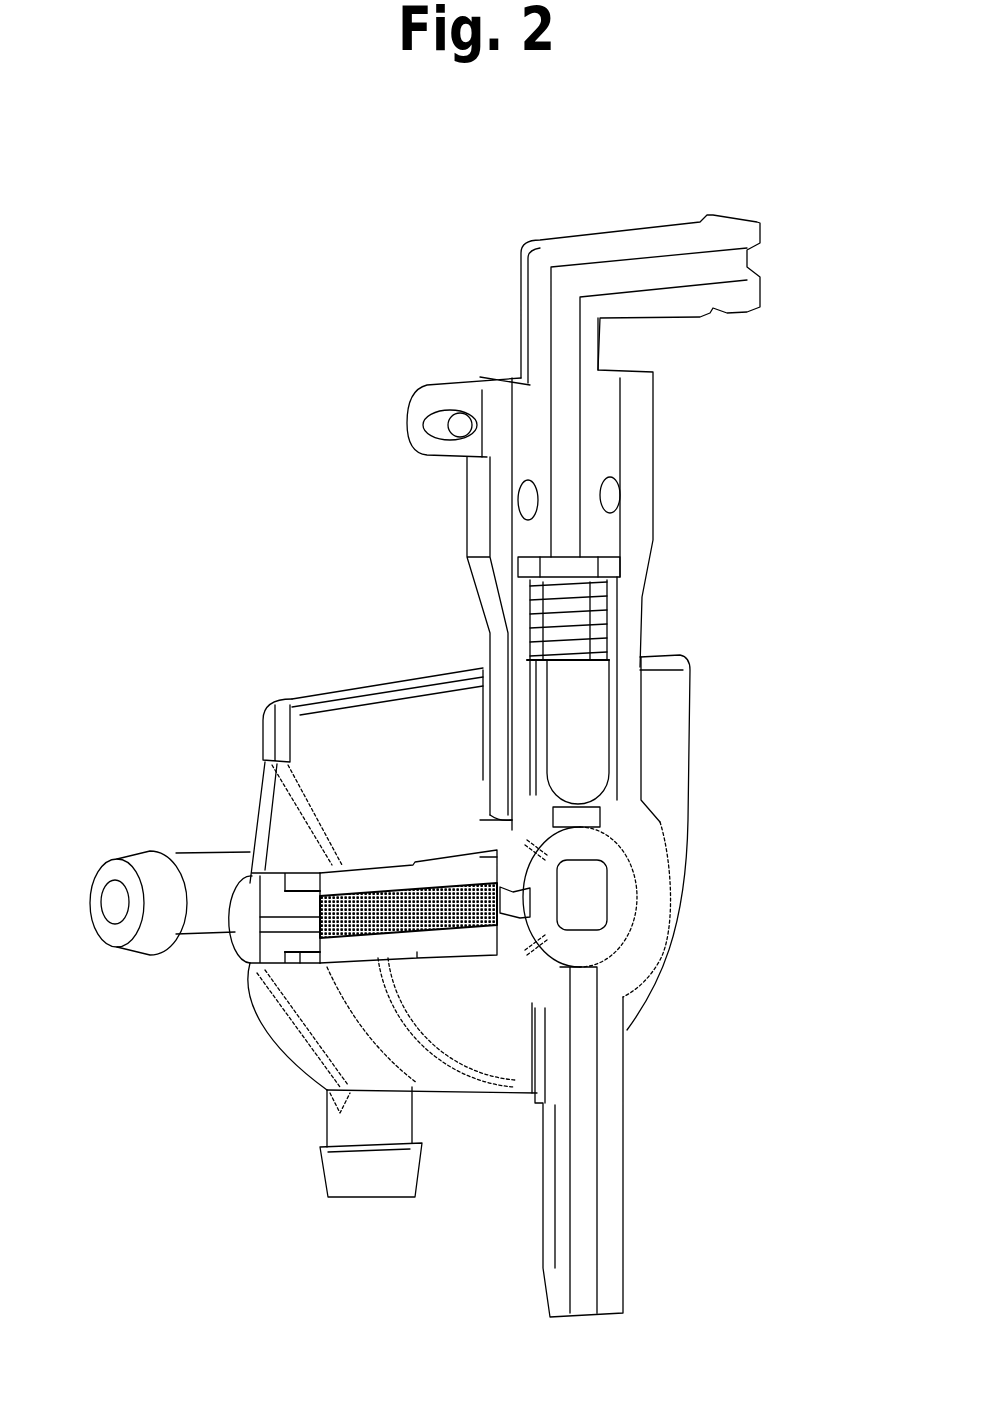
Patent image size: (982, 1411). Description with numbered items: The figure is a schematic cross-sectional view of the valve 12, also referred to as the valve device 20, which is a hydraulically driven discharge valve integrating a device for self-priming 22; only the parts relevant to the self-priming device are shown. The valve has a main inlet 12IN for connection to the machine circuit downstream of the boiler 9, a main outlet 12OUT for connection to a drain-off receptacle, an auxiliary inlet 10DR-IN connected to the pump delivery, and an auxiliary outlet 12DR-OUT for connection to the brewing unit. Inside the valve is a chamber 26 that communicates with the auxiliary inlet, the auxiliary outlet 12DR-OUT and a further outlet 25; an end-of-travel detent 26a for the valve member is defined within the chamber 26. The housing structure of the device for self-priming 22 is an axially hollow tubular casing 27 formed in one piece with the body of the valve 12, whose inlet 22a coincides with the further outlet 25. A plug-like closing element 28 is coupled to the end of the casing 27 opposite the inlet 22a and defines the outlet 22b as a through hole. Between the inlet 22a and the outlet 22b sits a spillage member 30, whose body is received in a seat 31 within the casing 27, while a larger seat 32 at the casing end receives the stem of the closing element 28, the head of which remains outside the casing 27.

The valve device 20 is at (250, 436).
The auxiliary outlet 12DR-OUT is at (478, 582).
The electrical heating device or boiler 9 is at (630, 657).
The valve 12 is at (727, 765).
The tubular casing 27 is at (372, 872).
The further outlet 25 is at (503, 895).
The inlet 22a is at (468, 784).
The seat 31 is at (412, 893).
The outlet 22b is at (270, 928).
The main inlet 12IN is at (152, 933).
The closing element 28 is at (252, 945).
The seat 32 is at (313, 952).
The device for self-priming 22 is at (370, 980).
The spillage member 30 is at (453, 910).
The end-of-travel detent 26a is at (598, 903).
The chamber 26 is at (617, 930).
The drain inlet port 10DR-IN is at (593, 1233).
The main outlet 12OUT is at (357, 1177).